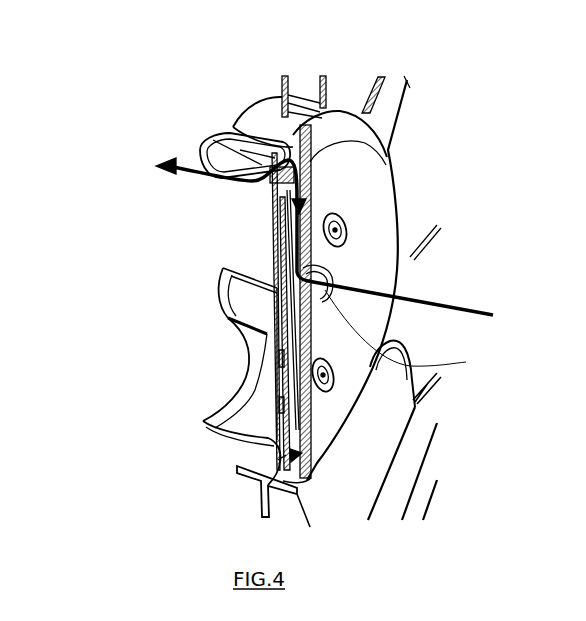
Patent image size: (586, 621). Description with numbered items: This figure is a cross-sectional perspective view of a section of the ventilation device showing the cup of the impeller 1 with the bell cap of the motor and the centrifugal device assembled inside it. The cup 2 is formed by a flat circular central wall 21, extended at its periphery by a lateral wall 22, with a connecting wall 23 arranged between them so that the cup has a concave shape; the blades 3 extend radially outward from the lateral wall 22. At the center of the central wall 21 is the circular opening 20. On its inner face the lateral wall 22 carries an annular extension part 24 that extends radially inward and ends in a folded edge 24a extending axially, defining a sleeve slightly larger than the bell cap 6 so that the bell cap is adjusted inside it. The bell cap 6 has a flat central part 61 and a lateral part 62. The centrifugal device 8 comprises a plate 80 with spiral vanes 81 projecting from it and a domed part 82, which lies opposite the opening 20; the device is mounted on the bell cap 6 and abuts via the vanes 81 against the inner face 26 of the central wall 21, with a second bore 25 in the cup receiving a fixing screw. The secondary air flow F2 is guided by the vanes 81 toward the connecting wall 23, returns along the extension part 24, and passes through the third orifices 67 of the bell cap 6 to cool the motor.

The impeller 1 is at (191, 73).
The cup 2 is at (415, 156).
The blades 3 is at (397, 93).
The bell cap 6 is at (205, 151).
The centrifugal device 8 is at (346, 216).
The opening 20 is at (401, 350).
The central wall 21 is at (300, 417).
The lateral wall 22 is at (272, 110).
The connecting wall 23 is at (333, 123).
The extension part 24 is at (233, 127).
The folded edge 24a is at (257, 160).
The second bore 25 is at (342, 247).
The inner face 26 is at (270, 487).
The central part 61 is at (278, 228).
The lateral part 62 is at (250, 403).
The third orifices 67 is at (303, 108).
The plate 80 is at (320, 430).
The vanes 81 is at (288, 452).
The domed part 82 is at (458, 378).
The secondary air flow F2 is at (498, 296).